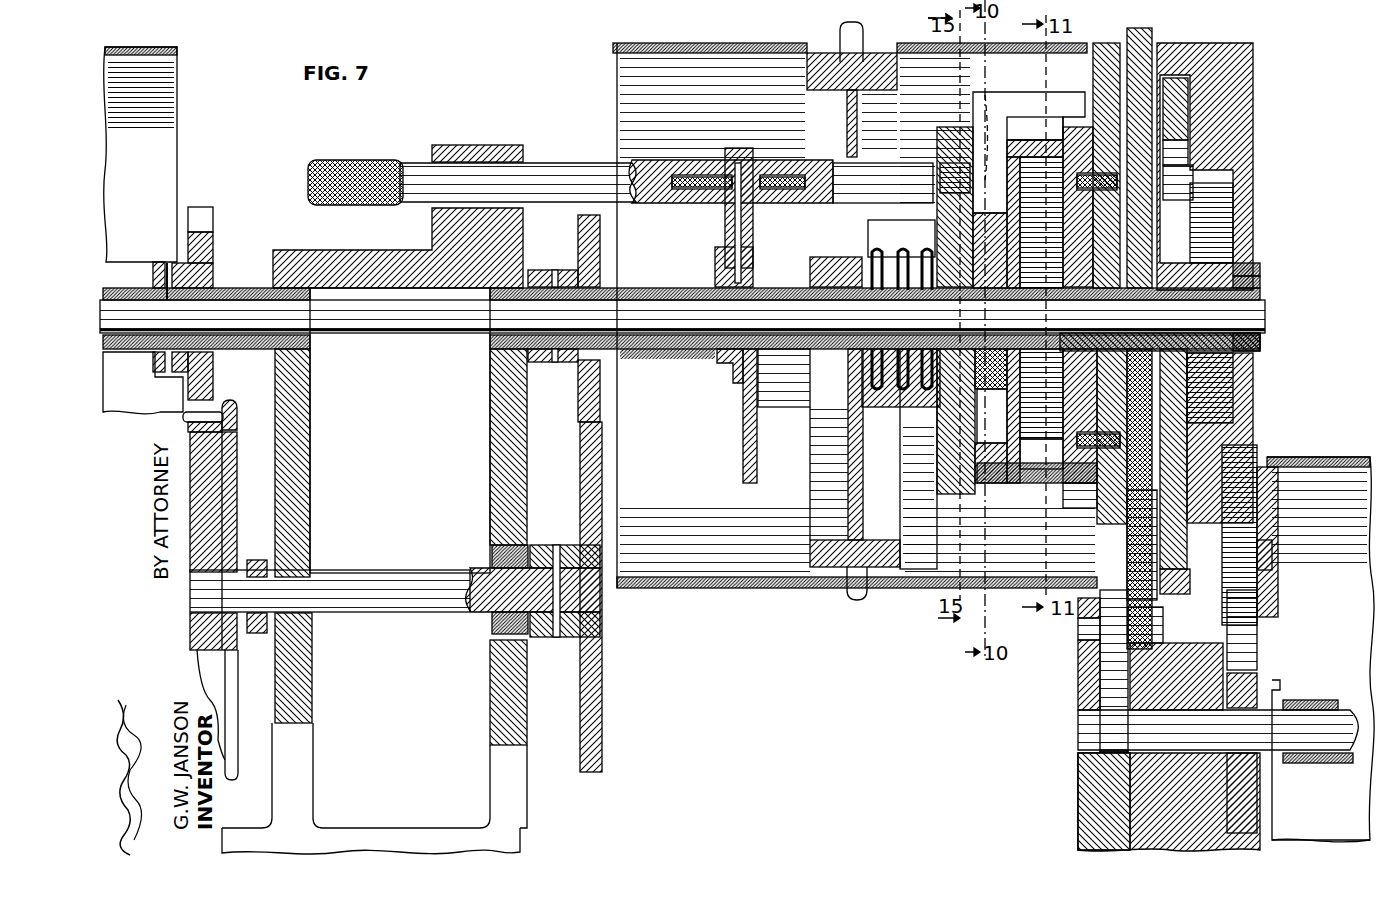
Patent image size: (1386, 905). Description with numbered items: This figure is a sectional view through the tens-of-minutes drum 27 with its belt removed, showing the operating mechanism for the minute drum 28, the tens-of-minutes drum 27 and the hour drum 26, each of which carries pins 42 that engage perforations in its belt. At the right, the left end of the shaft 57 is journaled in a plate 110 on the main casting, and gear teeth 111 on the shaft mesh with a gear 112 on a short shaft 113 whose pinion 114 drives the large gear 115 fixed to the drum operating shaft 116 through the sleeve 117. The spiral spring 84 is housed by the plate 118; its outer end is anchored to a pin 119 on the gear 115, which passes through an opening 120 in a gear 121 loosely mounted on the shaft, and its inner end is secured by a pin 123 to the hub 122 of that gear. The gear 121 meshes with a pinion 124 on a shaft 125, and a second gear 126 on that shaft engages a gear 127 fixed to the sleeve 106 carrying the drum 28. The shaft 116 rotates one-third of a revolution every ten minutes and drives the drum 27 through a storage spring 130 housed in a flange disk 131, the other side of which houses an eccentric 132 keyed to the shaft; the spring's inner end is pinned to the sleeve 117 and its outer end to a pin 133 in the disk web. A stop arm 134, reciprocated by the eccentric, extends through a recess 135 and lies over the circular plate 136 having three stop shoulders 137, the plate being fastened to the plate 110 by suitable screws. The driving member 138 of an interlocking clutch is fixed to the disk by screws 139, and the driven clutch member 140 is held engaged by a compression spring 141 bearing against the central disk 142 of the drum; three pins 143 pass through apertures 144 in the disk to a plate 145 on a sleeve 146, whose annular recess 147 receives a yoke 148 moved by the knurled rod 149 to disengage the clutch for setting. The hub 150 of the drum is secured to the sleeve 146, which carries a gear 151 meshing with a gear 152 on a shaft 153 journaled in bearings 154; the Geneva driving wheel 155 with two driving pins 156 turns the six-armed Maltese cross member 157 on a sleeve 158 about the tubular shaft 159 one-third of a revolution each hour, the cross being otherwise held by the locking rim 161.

The hour drum 26 is at (175, 130).
The tens-of-minutes drum 27 is at (686, 47).
The minute drum 28 is at (1320, 458).
The pins 42 is at (854, 600).
The shaft 57 is at (1325, 742).
The spiral spring 84 is at (1225, 410).
The sleeve 106 is at (1318, 712).
The plate 110 is at (1092, 800).
The gear teeth 111 is at (1120, 752).
The gear 112 is at (1100, 650).
The short shaft 113 is at (1080, 628).
The pinion 114 is at (1148, 630).
The large gear 115 is at (1140, 30).
The drum operating shaft 116 is at (1250, 313).
The sleeve 117 is at (1262, 343).
The plate 118 is at (1242, 192).
The pin 119 is at (1185, 168).
The opening 120 is at (1180, 150).
The gear 121 is at (1175, 110).
The hub 122 is at (1262, 262).
The pin 123 is at (1262, 284).
The pinion 124 is at (1161, 545).
The shaft 125 is at (1278, 555).
The second gear 126 is at (1262, 468).
The gear 127 is at (1260, 654).
The storage spring 130 is at (1040, 460).
The flange disk 131 is at (992, 486).
The eccentric 132 is at (952, 410).
The pin 133 is at (1025, 155).
The stop arm 134 is at (1063, 100).
The recess 135 is at (994, 104).
The circular plate 136 is at (1072, 483).
The stop shoulders 137 is at (1080, 505).
The driving member 138 is at (950, 438).
The screws 139 is at (960, 474).
The driven clutch member 140 is at (943, 210).
The compression spring 141 is at (886, 256).
The central disk 142 is at (848, 490).
The pins 143 is at (848, 190).
The apertures 144 is at (845, 155).
The plate 145 is at (745, 440).
The sleeve 146 is at (680, 350).
The annular recess 147 is at (735, 378).
The yoke 148 is at (728, 228).
The knurled rod 149 is at (393, 168).
The hub 150 is at (815, 266).
The gear 151 is at (592, 247).
The gear 152 is at (602, 491).
The shaft 153 is at (398, 600).
The bearings 154 is at (305, 620).
The driving wheel 155 is at (224, 503).
The driving pins 156 is at (215, 408).
The Maltese cross member 157 is at (205, 222).
The sleeve 158 is at (132, 288).
The tubular shaft 159 is at (247, 290).
The locking rim 161 is at (208, 433).